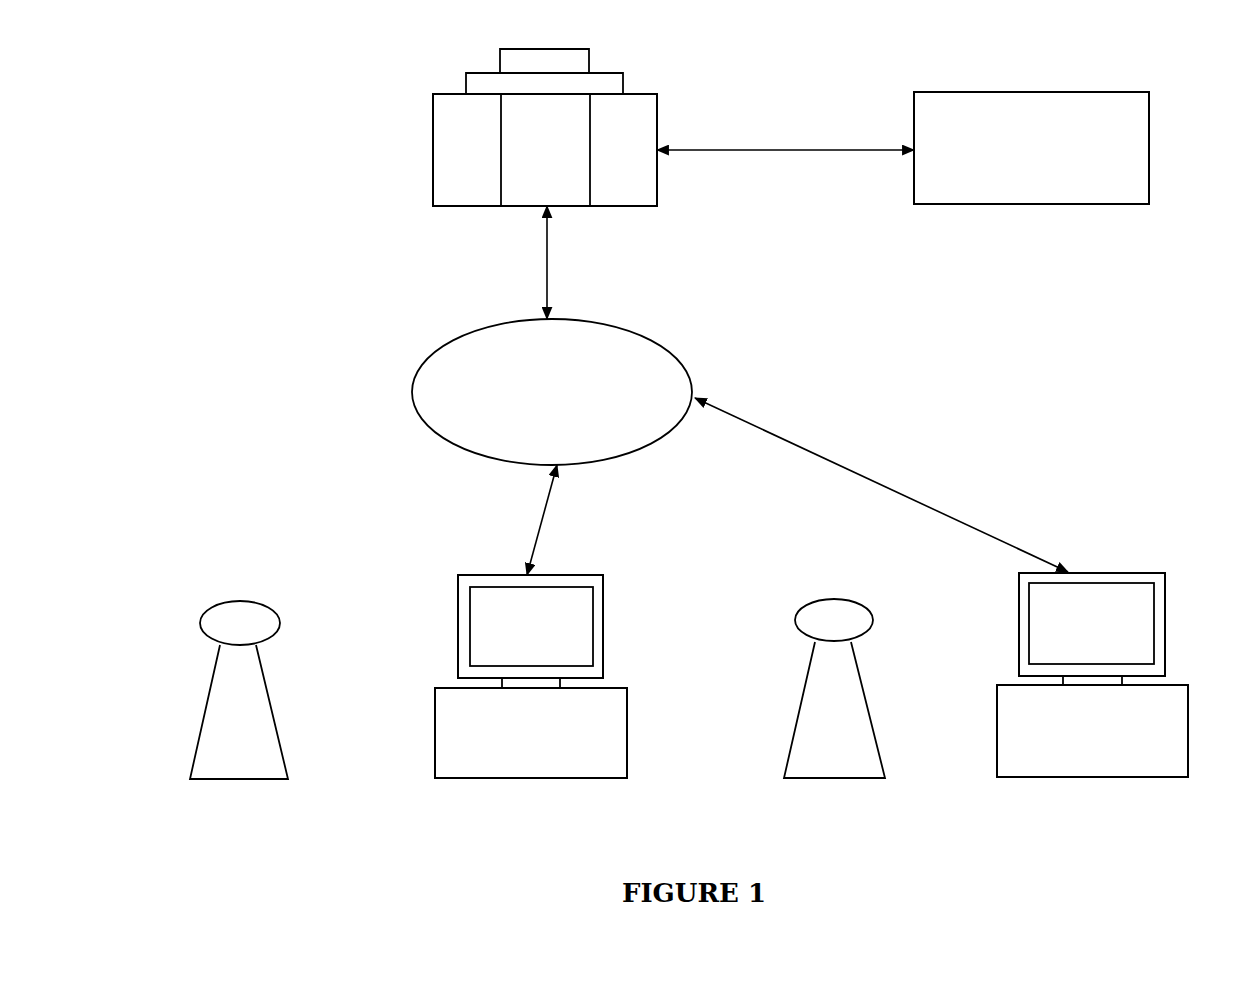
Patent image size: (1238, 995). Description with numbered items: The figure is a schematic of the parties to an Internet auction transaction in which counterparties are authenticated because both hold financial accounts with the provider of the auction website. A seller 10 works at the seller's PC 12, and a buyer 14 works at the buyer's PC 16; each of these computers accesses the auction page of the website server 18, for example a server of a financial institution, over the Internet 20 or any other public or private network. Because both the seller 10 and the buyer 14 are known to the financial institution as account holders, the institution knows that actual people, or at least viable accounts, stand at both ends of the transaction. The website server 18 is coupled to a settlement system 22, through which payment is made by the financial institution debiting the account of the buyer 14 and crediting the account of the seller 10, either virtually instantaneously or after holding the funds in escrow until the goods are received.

The seller 10 is at (838, 598).
The seller's PC 12 is at (1165, 618).
The buyer 14 is at (244, 601).
The buyer's PC 16 is at (603, 621).
The website server 18 is at (433, 151).
The Internet 20 is at (412, 397).
The settlement system 22 is at (1038, 204).